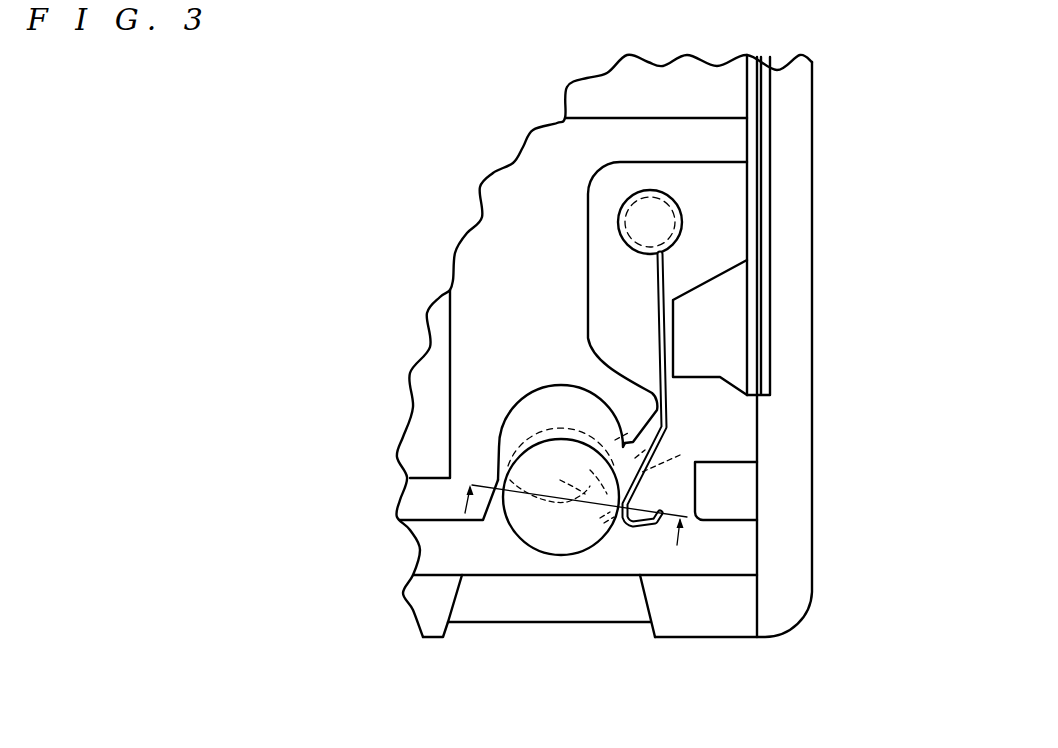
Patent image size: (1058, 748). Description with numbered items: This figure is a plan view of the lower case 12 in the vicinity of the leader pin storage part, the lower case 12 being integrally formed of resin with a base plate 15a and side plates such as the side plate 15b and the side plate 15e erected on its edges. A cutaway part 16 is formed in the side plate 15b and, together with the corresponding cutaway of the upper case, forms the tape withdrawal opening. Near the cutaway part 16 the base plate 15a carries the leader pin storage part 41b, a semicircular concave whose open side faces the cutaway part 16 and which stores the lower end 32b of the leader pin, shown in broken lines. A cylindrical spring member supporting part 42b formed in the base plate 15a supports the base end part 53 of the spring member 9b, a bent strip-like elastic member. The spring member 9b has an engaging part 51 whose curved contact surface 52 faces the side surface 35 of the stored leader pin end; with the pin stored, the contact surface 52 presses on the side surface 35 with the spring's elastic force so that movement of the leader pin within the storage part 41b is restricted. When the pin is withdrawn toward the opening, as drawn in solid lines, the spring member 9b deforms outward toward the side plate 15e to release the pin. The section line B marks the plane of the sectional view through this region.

The lower case 12 is at (306, 96).
The base plate 15a is at (513, 223).
The side plate 15b is at (432, 610).
The side plate 15e is at (800, 290).
The cutaway part 16 is at (535, 593).
The leader pin storage part 41b is at (495, 396).
The lower end 32b is at (495, 443).
The spring member supporting part 42b is at (619, 224).
The base end part 53 is at (628, 197).
The spring member 9b is at (667, 423).
The engaging part 51 is at (590, 520).
The contact surface 52 is at (604, 484).
The side surface 35 is at (645, 478).
The section line B- B is at (578, 502).